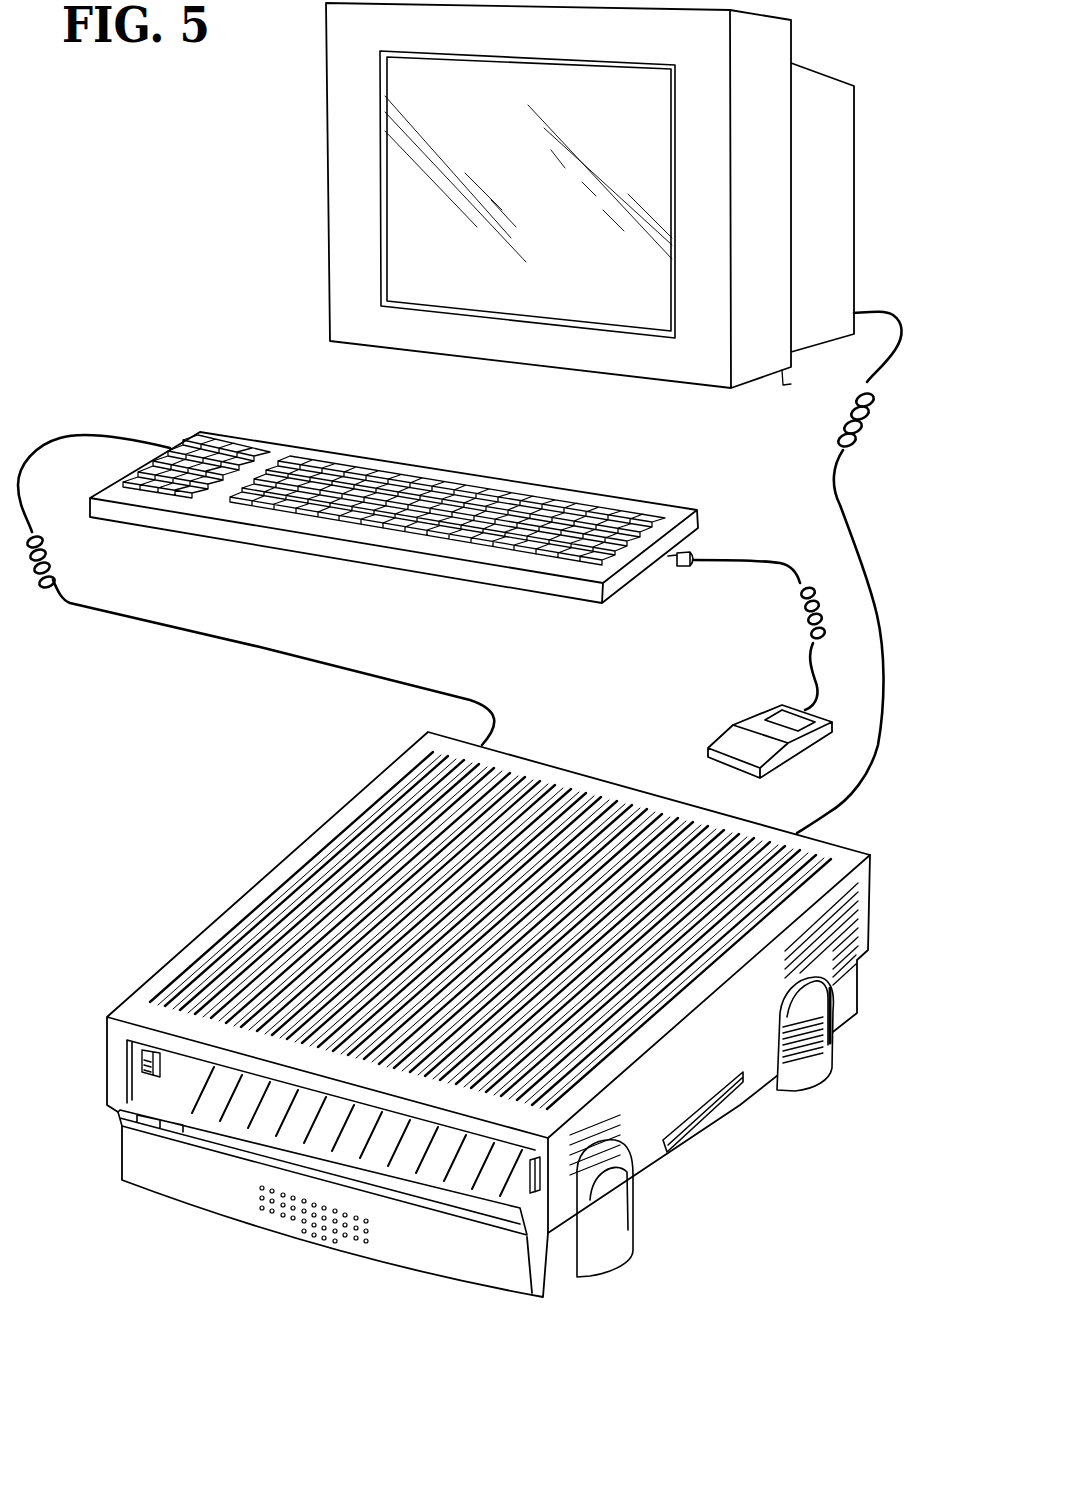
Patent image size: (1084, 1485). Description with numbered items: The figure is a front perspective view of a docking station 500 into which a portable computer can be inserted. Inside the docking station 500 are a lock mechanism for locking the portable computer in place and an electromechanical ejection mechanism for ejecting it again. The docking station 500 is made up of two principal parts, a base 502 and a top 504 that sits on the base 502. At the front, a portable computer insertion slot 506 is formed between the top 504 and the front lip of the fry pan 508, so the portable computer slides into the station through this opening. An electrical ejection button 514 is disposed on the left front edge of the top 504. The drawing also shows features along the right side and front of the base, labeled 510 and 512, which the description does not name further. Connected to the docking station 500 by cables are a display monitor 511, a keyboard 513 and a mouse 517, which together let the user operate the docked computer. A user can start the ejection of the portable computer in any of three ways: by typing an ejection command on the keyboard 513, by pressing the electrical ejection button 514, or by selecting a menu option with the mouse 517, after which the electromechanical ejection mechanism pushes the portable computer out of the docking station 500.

The docking station 500 is at (451, 1024).
The base 502 is at (650, 1183).
The top 504 is at (533, 770).
The portable computer insertion slot 506 is at (140, 1052).
The fry pan 508 is at (520, 1230).
The slot 510 is at (715, 1108).
The speaker holes 512 is at (315, 1227).
The electrical ejection button 514 is at (535, 1192).
The display monitor 511 is at (327, 215).
The keyboard 513 is at (287, 443).
The mouse 517 is at (750, 722).